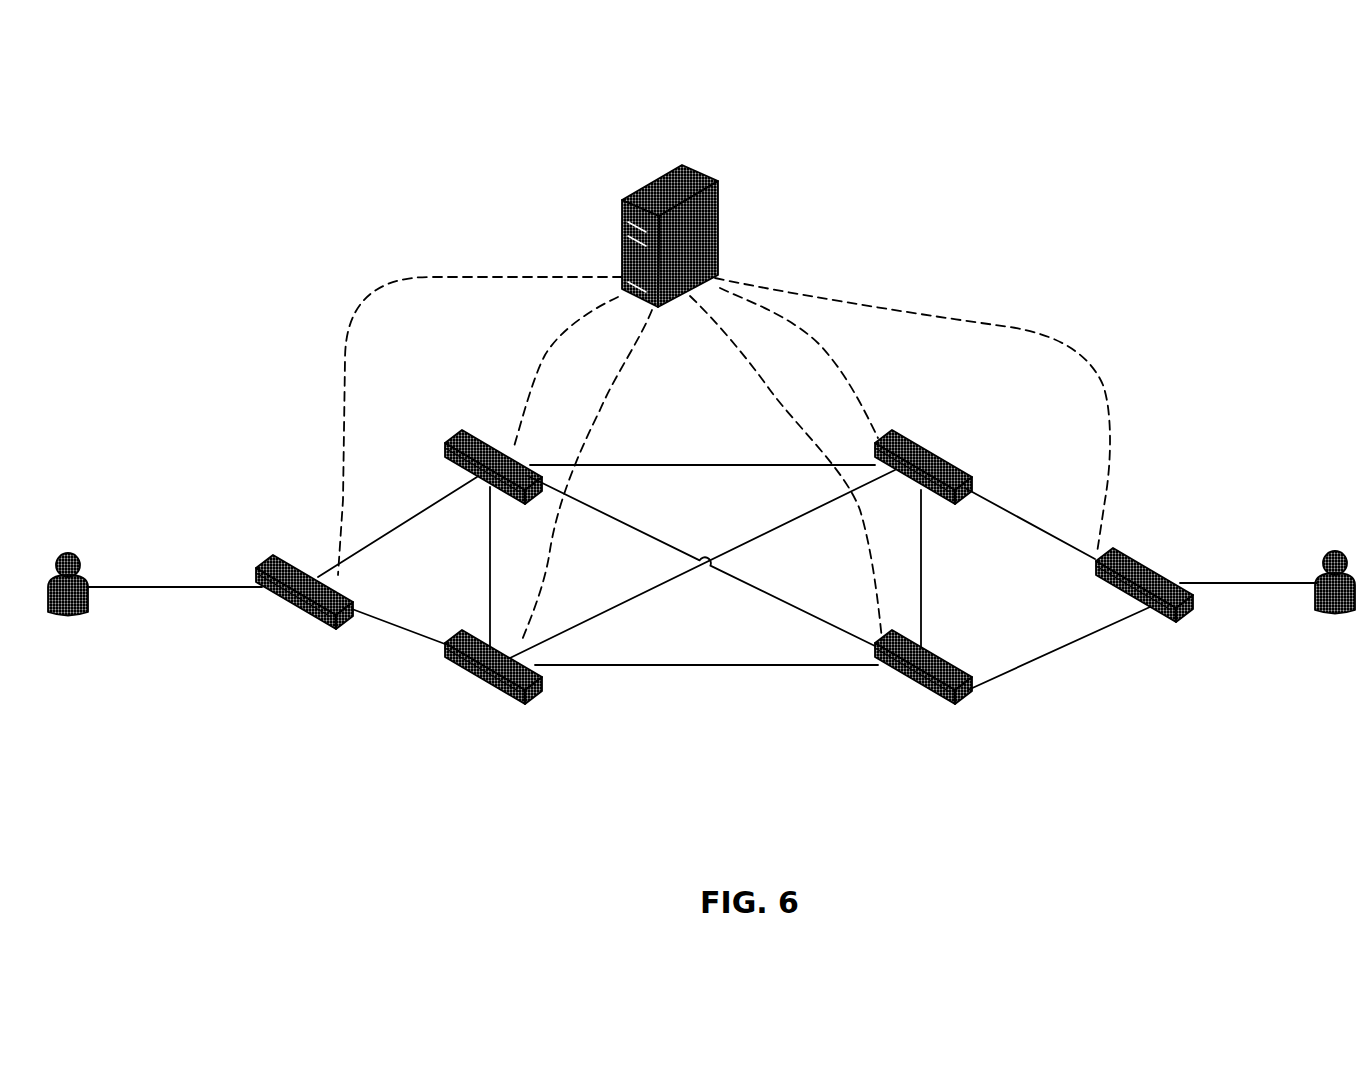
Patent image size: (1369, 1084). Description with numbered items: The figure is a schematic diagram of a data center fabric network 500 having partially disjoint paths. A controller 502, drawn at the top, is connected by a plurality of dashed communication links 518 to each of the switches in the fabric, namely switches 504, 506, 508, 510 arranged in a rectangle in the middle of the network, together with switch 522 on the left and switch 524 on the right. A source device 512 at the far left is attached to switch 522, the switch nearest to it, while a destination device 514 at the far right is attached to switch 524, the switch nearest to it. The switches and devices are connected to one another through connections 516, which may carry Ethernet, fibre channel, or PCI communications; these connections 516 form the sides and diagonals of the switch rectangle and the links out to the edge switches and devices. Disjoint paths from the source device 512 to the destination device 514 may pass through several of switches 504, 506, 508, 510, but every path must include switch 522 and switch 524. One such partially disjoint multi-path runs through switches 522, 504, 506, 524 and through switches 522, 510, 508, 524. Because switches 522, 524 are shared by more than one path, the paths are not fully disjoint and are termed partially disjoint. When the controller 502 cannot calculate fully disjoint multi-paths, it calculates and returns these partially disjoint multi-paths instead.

The fabric network 500 is at (942, 165).
The controller 502 is at (690, 188).
The switch 504 is at (462, 441).
The switch 506 is at (932, 463).
The switch 508 is at (917, 675).
The switch 510 is at (490, 676).
The source device 512 is at (64, 617).
The destination device 514 is at (1335, 610).
The connections 516 is at (199, 574).
The communication links 518 is at (393, 289).
The switch nearest to the source device 522 is at (300, 606).
The switch nearest to the destination device 524 is at (1150, 607).